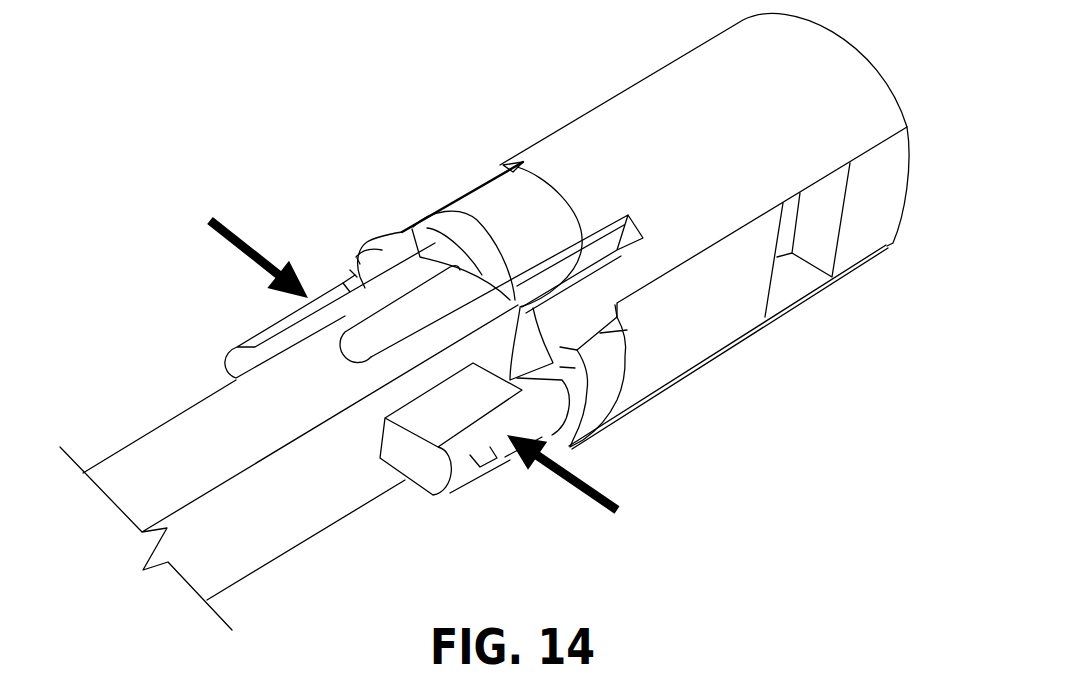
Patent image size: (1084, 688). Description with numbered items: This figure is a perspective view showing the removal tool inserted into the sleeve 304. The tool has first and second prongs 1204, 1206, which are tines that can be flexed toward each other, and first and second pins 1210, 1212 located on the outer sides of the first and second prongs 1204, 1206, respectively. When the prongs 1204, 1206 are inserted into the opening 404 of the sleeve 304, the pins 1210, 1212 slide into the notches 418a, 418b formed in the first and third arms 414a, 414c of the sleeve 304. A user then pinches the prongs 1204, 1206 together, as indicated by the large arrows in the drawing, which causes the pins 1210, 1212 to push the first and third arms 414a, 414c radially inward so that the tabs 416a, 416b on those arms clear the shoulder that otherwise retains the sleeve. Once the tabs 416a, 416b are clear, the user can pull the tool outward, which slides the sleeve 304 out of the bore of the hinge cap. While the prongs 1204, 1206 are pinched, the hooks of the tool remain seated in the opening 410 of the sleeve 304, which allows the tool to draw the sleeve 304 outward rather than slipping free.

The sleeve 304 is at (618, 120).
The opening 404 is at (488, 285).
The opening 410 is at (795, 276).
The first arm 414a is at (378, 238).
The third arm 414c is at (592, 410).
The tab 416a is at (357, 258).
The tab 416b is at (600, 428).
The notch 418a is at (338, 262).
The notch 418b is at (575, 379).
The first prong 1204 is at (470, 320).
The second prong 1206 is at (382, 250).
The first pin 1210 is at (290, 327).
The second pin 1212 is at (495, 478).